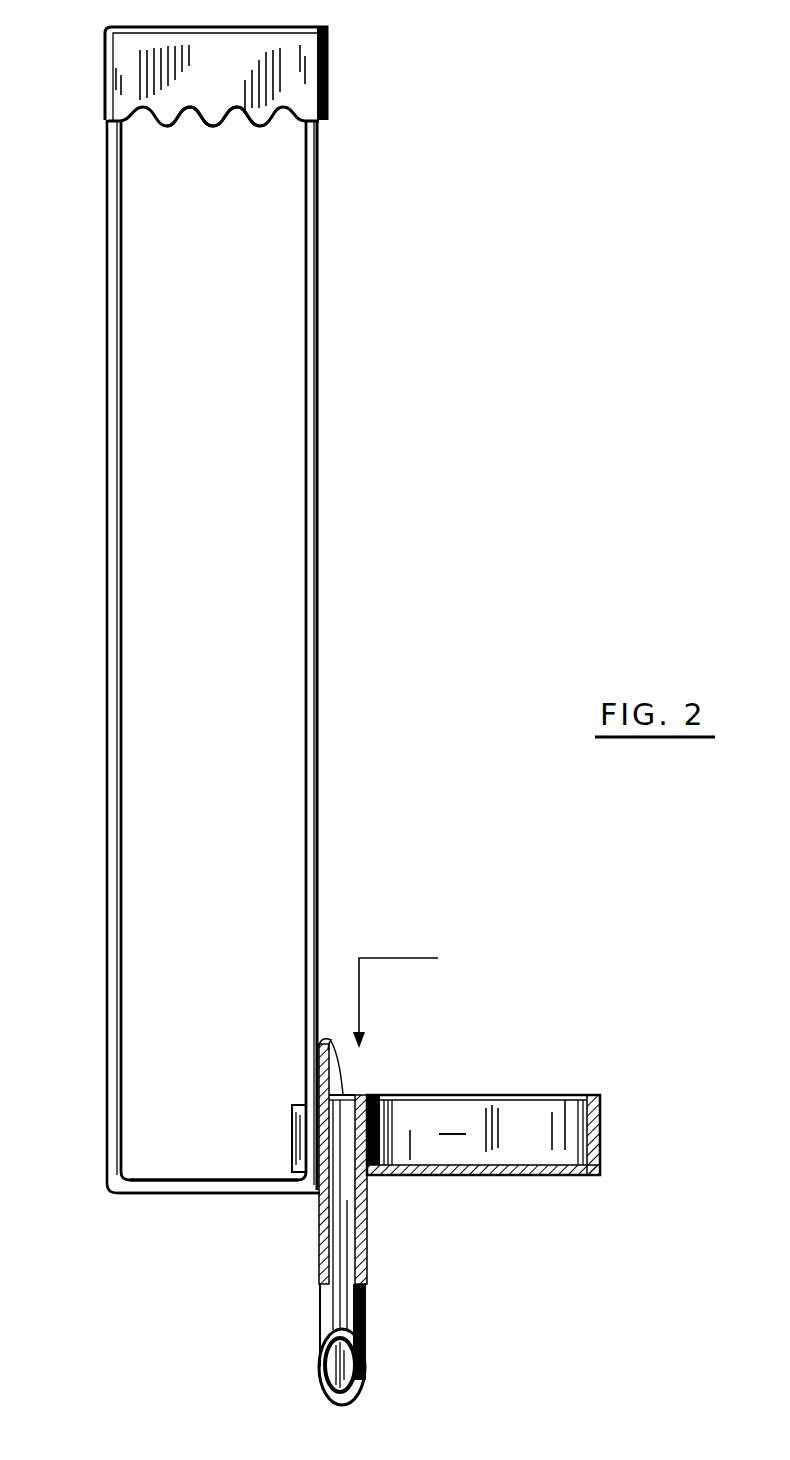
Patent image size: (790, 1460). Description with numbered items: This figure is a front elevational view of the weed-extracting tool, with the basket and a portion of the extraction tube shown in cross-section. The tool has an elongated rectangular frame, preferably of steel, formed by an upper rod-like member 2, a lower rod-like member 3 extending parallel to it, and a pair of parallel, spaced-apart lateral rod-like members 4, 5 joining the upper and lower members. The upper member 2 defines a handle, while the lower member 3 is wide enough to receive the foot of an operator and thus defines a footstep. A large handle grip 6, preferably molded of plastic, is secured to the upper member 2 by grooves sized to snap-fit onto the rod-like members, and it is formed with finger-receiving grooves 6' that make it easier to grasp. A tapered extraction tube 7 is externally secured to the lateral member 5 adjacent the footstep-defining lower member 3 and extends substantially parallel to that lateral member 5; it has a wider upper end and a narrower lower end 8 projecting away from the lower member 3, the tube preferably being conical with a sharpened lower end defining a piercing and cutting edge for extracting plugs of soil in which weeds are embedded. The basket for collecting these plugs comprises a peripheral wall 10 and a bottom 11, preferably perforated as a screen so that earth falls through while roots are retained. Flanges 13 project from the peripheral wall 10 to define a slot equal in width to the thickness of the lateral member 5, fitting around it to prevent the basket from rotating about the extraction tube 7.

The upper rod-like member 2 is at (170, 27).
The lower rod-like member 3 is at (168, 1187).
The lateral rod-like member 4 is at (107, 650).
The lateral rod-like member 5 is at (319, 650).
The handle grip 6 is at (261, 76).
The finger-receiving grooves 6' is at (213, 152).
The extraction tube 7 is at (320, 1240).
The lower end 8 is at (322, 1357).
The peripheral wall 10 is at (483, 1173).
The bottom 11 is at (532, 1175).
The flanges 13 is at (292, 1143).